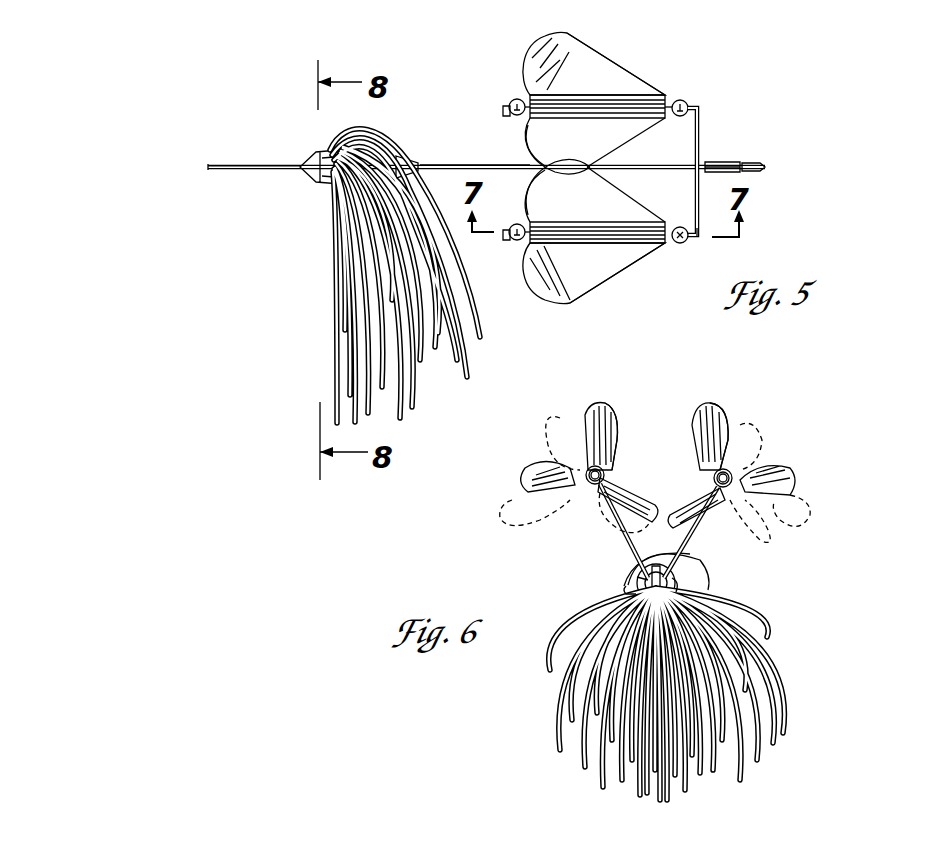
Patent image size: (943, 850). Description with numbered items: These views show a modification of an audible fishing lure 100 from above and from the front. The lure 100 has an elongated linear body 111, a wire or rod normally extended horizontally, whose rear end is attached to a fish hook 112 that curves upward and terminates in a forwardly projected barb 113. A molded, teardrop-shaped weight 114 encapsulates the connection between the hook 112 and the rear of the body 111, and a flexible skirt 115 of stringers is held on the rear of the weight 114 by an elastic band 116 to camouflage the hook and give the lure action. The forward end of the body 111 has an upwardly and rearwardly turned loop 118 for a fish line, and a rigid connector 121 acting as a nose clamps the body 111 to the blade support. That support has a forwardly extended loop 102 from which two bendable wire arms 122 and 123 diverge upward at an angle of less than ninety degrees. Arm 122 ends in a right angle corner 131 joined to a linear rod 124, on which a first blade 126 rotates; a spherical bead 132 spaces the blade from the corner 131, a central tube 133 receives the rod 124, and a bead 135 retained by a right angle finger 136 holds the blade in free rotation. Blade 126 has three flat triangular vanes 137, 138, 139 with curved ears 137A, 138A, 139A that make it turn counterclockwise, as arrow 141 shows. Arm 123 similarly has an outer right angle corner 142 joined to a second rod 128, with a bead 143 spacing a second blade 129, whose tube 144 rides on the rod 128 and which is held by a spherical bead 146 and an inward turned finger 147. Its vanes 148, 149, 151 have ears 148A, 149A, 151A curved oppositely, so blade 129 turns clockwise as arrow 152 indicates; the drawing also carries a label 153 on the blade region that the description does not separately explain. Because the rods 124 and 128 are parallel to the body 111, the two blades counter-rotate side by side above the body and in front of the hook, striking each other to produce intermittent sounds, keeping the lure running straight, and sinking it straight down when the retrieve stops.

In FIG. 5, the audible fishing lure 100 is at (768, 65).
In FIG. 6, the audible fishing lure 100 is at (810, 407).
In FIG. 5, the forwardly extended loop 102 is at (745, 165).
In FIG. 6, the forwardly extended loop 102 is at (625, 590).
In FIG. 5, the elongated linear body 111 is at (448, 165).
In FIG. 5, the fish hook 112 is at (212, 172).
In FIG. 5, the barb 113 is at (279, 158).
In FIG. 5, the weight 114 is at (413, 120).
In FIG. 6, the weight 114 is at (690, 603).
In FIG. 5, the flexible skirt 115 is at (455, 362).
In FIG. 6, the flexible skirt 115 is at (547, 742).
In FIG. 5, the elastic band 116 is at (325, 182).
In FIG. 5, the loop 118 is at (780, 172).
In FIG. 6, the loop 118 is at (638, 576).
In FIG. 5, the rigid connector 121 is at (712, 163).
In FIG. 6, the rigid connector 121 is at (682, 590).
In FIG. 5, the arm 122 is at (698, 205).
In FIG. 6, the arm 122 is at (607, 487).
In FIG. 5, the arm 123 is at (702, 120).
In FIG. 6, the arm 123 is at (700, 543).
In FIG. 5, the linear rod 124 is at (528, 240).
In FIG. 5, the first blade 126 is at (593, 297).
In FIG. 6, the first blade 126 is at (590, 393).
In FIG. 5, the second rod 128 is at (525, 90).
In FIG. 5, the second blade 129 is at (603, 50).
In FIG. 6, the second blade 129 is at (790, 467).
In FIG. 5, the right angle corner 131 is at (698, 238).
In FIG. 5, the spherical bead 132 is at (680, 246).
In FIG. 6, the spherical bead 132 is at (598, 468).
In FIG. 5, the tube 133 is at (552, 232).
In FIG. 6, the tube 133 is at (604, 474).
In FIG. 5, the bead 135 is at (518, 222).
In FIG. 5, the right angle finger 136 is at (505, 238).
In FIG. 6, the vane 137 is at (622, 497).
In FIG. 6, the curved ear 137A is at (627, 517).
In FIG. 5, the vane 138 is at (582, 278).
In FIG. 6, the vane 138 is at (505, 518).
In FIG. 5, the curved ear 138A is at (562, 287).
In FIG. 6, the curved ear 138A is at (547, 470).
In FIG. 5, the vane 139 is at (587, 192).
In FIG. 6, the vane 139 is at (587, 417).
In FIG. 5, the curved ear 139A is at (547, 190).
In FIG. 6, the curved ear 139A is at (607, 410).
In FIG. 6, the arrow 141 is at (500, 490).
In FIG. 5, the outer right angle corner 142 is at (692, 104).
In FIG. 5, the bead 143 is at (688, 100).
In FIG. 6, the bead 143 is at (715, 468).
In FIG. 5, the tube 144 is at (568, 100).
In FIG. 6, the tube 144 is at (755, 455).
In FIG. 5, the spherical bead 146 is at (510, 100).
In FIG. 5, the finger 147 is at (503, 108).
In FIG. 6, the vane 148 is at (715, 474).
In FIG. 6, the ear 148A is at (695, 553).
In FIG. 5, the vane 149 is at (632, 129).
In FIG. 6, the vane 149 is at (728, 403).
In FIG. 5, the ear 149A is at (538, 152).
In FIG. 6, the ear 149A is at (705, 423).
In FIG. 5, the vane 151 is at (612, 75).
In FIG. 6, the vane 151 is at (810, 517).
In FIG. 5, the ear 151A is at (555, 37).
In FIG. 6, the ear 151A is at (797, 480).
In FIG. 5, the arrow 152 is at (557, 146).
In FIG. 6, the arrow 152 is at (758, 406).
In FIG. 5, the blade wing 153 is at (598, 152).